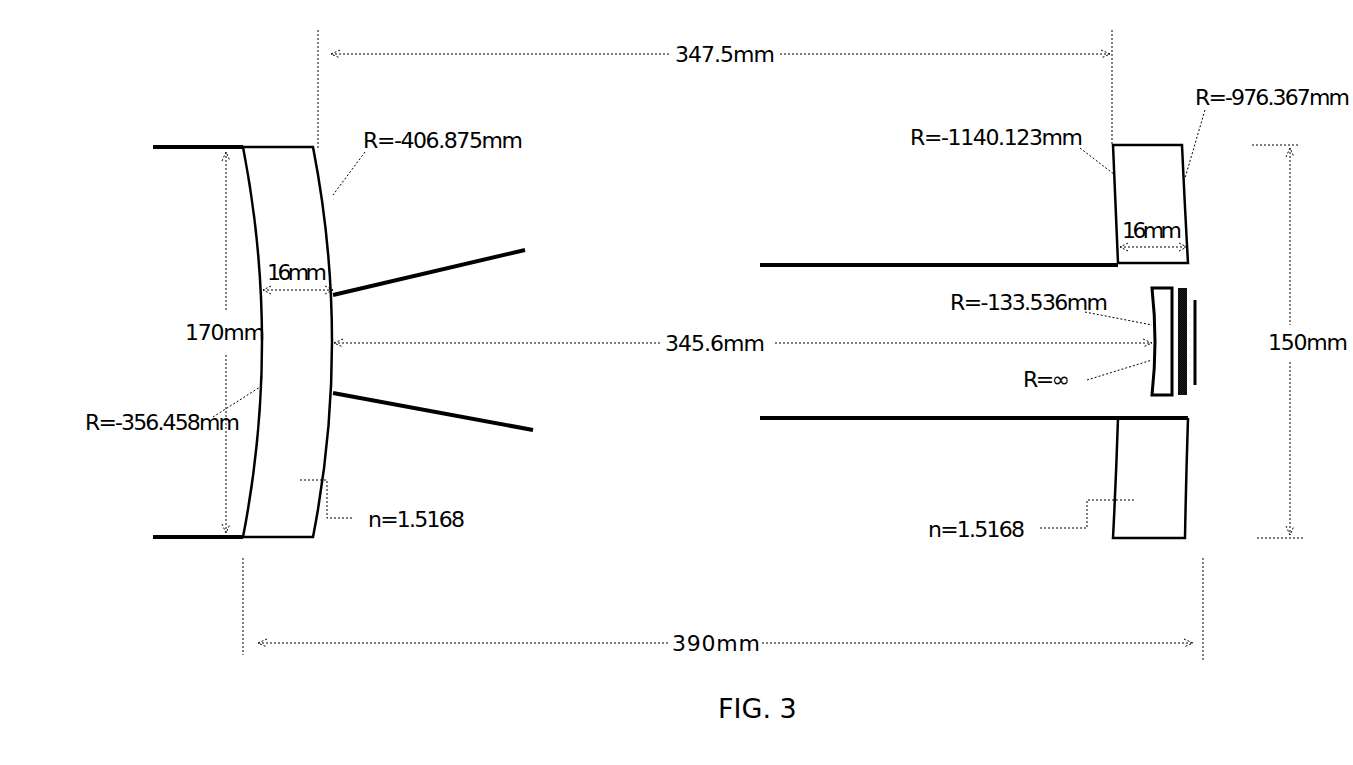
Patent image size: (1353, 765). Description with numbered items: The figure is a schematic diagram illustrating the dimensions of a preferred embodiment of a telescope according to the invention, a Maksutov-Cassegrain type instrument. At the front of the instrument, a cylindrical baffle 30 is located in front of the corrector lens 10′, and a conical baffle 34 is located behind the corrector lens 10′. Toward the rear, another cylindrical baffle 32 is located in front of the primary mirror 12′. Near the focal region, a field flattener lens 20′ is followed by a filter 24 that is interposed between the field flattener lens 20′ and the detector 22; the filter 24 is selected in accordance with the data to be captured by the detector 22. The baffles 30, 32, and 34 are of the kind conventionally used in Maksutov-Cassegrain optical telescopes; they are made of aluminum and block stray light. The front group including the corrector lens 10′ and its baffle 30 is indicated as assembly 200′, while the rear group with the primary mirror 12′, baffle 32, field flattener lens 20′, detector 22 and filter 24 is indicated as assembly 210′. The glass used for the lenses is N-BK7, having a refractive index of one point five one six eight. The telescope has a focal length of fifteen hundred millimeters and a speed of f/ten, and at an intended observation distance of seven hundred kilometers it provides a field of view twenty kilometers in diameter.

The cylindrical baffle 30 is at (180, 145).
The corrector lens 10′ is at (284, 150).
The primary mirror 12′ is at (1158, 163).
The field flattener lens 20′ is at (1160, 290).
The detector 22 is at (1195, 342).
The filter 24 is at (1184, 395).
The cylindrical baffle 32 is at (790, 263).
The conical baffle 34 is at (453, 273).
The first lens assembly 200′ is at (175, 305).
The second lens assembly 210′ is at (1225, 540).